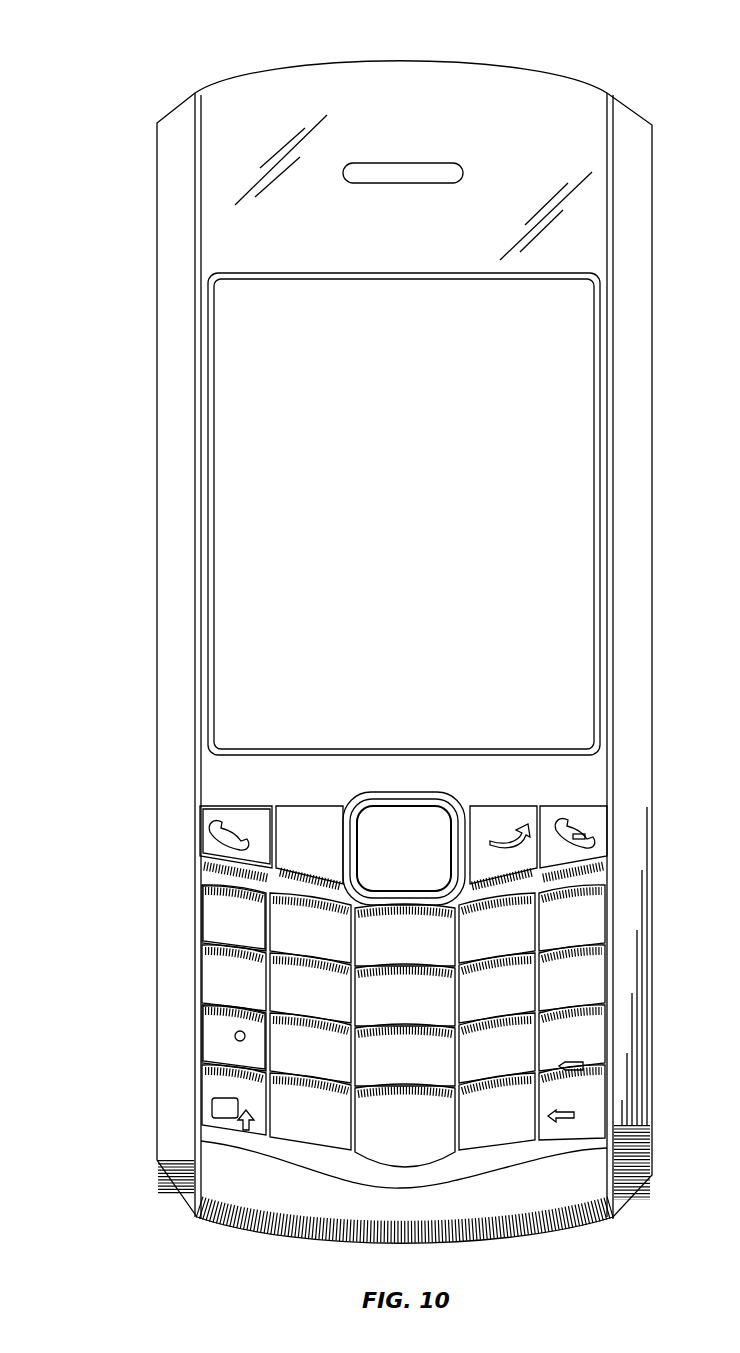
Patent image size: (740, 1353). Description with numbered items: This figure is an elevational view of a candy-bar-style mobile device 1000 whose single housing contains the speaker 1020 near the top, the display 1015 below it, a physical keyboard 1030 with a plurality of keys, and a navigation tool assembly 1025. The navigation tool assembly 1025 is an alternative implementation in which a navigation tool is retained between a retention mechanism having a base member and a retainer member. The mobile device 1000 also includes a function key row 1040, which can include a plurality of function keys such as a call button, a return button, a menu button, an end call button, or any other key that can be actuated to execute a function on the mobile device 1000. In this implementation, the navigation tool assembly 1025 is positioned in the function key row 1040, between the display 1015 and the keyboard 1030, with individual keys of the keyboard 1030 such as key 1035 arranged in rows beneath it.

The mobile device 1000 is at (98, 37).
The display 1015 is at (257, 485).
The speaker 1020 is at (407, 163).
The navigation tool assembly 1025 is at (392, 847).
The physical keyboard 1030 is at (212, 1037).
The keyboard key 1035 is at (217, 908).
The function key row 1040 is at (232, 840).